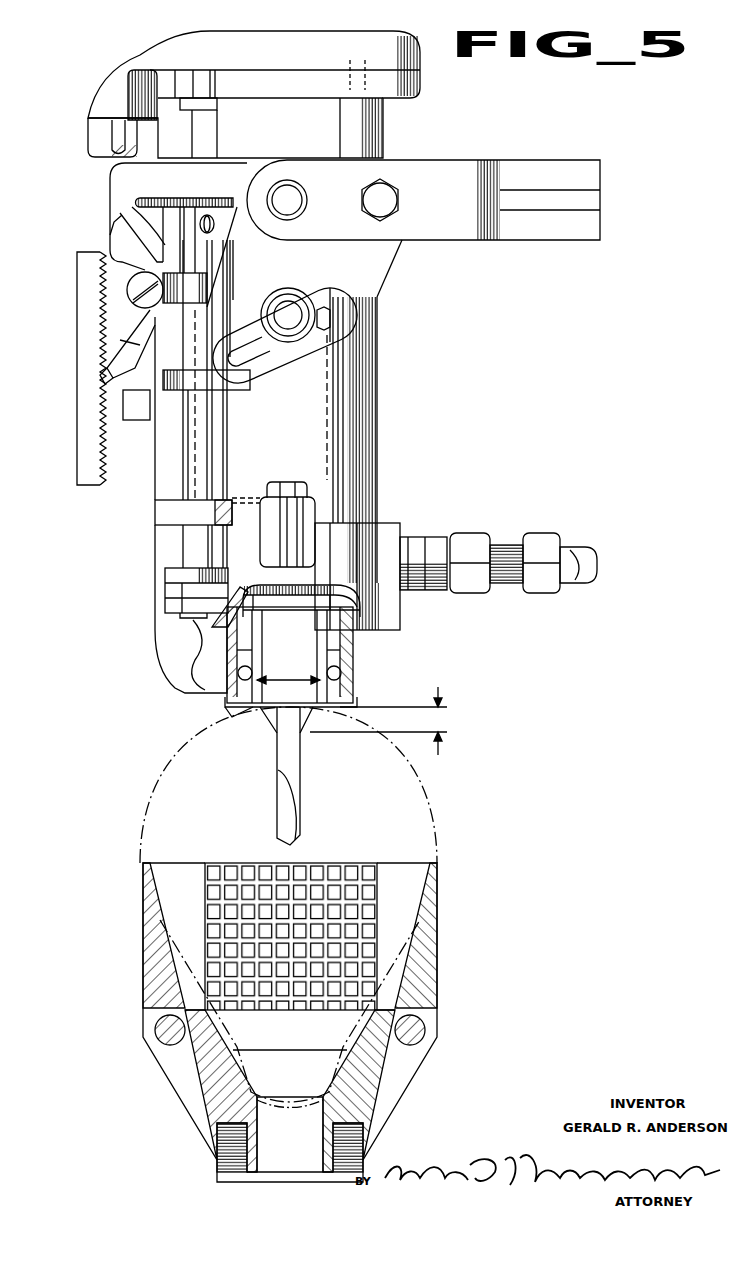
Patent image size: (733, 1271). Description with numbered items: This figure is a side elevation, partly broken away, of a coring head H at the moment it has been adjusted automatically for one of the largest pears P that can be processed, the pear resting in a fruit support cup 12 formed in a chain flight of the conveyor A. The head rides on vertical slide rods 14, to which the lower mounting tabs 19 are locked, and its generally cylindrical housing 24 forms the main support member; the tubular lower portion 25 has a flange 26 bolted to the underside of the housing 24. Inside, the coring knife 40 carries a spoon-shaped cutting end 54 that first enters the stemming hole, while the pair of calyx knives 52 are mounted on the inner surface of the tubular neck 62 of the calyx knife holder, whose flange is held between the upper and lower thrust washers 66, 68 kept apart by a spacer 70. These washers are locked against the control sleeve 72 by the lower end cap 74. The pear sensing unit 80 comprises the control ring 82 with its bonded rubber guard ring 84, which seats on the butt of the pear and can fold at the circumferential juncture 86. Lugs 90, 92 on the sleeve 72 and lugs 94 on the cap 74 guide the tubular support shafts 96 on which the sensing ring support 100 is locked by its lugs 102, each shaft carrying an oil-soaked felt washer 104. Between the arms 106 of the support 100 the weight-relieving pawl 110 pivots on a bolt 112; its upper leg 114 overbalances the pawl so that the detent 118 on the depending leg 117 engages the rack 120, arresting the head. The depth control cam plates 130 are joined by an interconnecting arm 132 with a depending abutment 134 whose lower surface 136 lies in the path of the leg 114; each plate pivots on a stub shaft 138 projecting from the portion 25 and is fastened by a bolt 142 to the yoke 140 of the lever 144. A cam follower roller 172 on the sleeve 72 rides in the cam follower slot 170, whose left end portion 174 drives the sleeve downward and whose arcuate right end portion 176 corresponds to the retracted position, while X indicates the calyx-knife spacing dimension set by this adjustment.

The fruit support cup 12 is at (427, 912).
The slide rod 14 is at (105, 136).
The lower mounting tab 19 is at (123, 88).
The housing 24 is at (303, 62).
The lower portion of the coring head 25 is at (383, 136).
The flange 26 is at (313, 78).
The coring knife 40 is at (293, 762).
The calyx knife 52 is at (293, 730).
The spoon-shaped cutting end 54 is at (287, 815).
The tubular neck 62 is at (297, 667).
The upper thrust washer 66 is at (288, 587).
The lower thrust washer 68 is at (247, 613).
The spacer 70 is at (255, 602).
The control sleeve 72 is at (380, 513).
The lower end cap 74 is at (257, 560).
The pear sensing unit 80 is at (358, 653).
The control ring 82 is at (335, 663).
The rubber guard ring 84 is at (240, 710).
The circumferential juncture 86 is at (321, 673).
The upper apertured lugs 90 is at (216, 231).
The lower apertured lugs 92 is at (207, 382).
The cap lugs 94 is at (183, 600).
The support shaft 96 is at (197, 427).
The sensing ring support 100 is at (167, 475).
The support lugs 102 is at (207, 291).
The felt washer 104 is at (177, 577).
The arms 106 is at (163, 333).
The weight-relieving pawl 110 is at (127, 313).
The bolt 112 is at (133, 293).
The upper leg 114 is at (167, 272).
The depending leg 117 is at (130, 331).
The detent 118 is at (110, 364).
The rack 120 is at (85, 403).
The depth control cam plate 130 is at (368, 273).
The interconnecting arm 132 is at (163, 175).
The depending abutment 134 is at (118, 212).
The lower surface 136 is at (143, 267).
The stub shaft 138 is at (292, 197).
The yoke 140 is at (437, 236).
The bolt 142 is at (392, 199).
The lever 144 is at (575, 180).
The cam follower slot 170 is at (353, 297).
The cam follower roller 172 is at (296, 303).
The left end portion of the slot 174 is at (247, 362).
The right end portion of the slot 176 is at (337, 322).
The coring head H is at (378, 397).
The pear P is at (163, 750).
The conveyor A is at (443, 868).
The dimension X is at (352, 713).